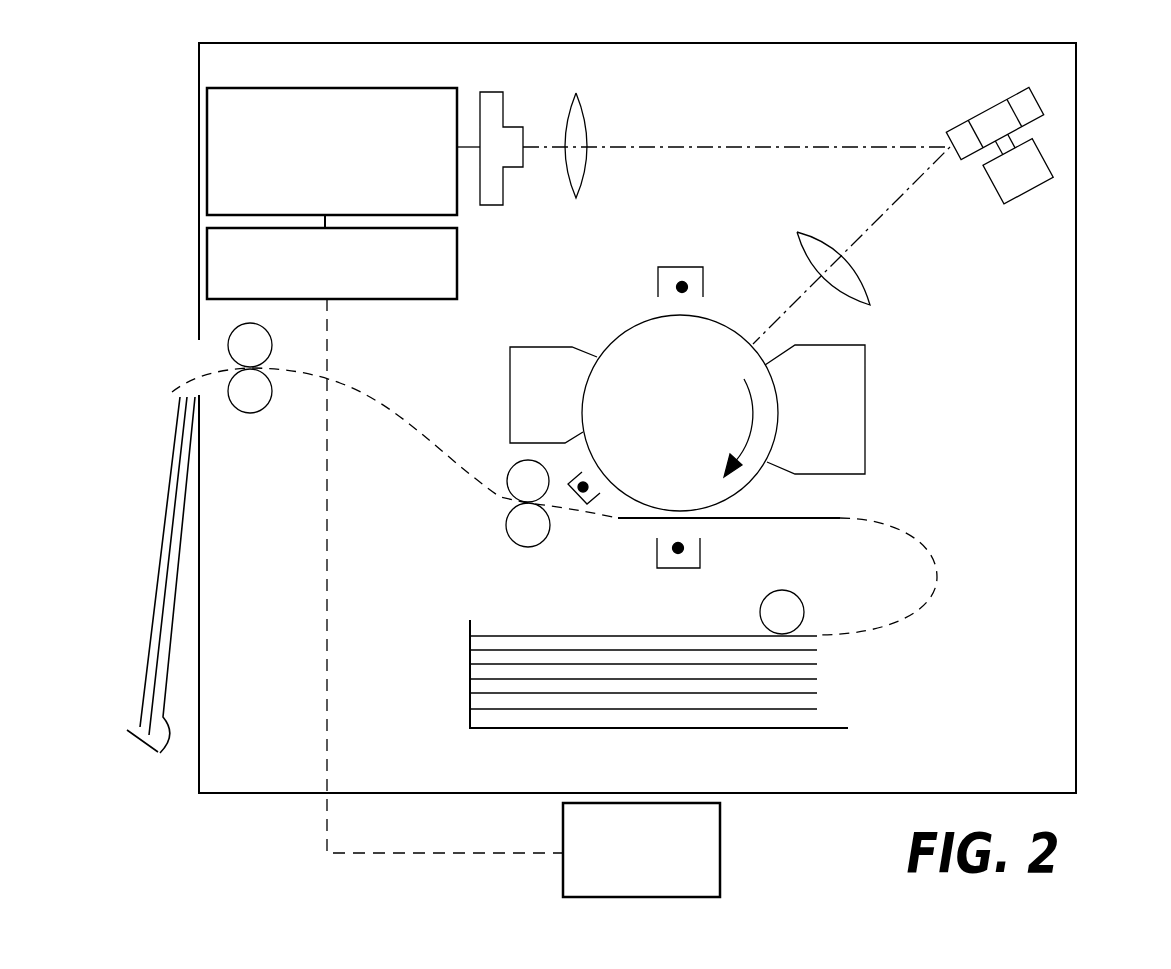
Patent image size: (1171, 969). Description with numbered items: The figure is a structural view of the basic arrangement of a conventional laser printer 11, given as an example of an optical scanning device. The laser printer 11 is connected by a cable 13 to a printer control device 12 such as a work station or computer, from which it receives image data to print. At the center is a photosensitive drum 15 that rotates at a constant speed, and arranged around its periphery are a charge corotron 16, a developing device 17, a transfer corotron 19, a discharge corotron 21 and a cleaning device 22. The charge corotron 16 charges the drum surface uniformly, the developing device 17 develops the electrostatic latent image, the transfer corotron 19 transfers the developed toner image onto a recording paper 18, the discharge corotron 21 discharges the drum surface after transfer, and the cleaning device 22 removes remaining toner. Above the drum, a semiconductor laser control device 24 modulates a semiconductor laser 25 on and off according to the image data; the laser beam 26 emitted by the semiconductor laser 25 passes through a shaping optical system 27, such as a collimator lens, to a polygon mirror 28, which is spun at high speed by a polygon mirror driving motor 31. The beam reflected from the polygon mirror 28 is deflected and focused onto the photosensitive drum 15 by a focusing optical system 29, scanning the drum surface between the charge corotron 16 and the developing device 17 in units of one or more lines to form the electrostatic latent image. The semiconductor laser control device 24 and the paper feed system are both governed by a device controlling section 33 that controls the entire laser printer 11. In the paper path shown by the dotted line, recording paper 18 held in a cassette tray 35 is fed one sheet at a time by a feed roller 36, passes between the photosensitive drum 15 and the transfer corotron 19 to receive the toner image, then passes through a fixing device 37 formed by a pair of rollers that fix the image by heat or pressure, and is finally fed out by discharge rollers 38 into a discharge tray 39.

The laser printer 11 is at (1080, 349).
The printer control device 12 is at (720, 850).
The cable 13 is at (327, 815).
The photosensitive drum 15 is at (625, 332).
The charge corotron 16 is at (677, 265).
The developing device 17 is at (865, 410).
The recording paper 18 is at (828, 518).
The transfer corotron 19 is at (700, 547).
The discharge corotron 21 is at (598, 501).
The cleaning device 22 is at (555, 348).
The semiconductor laser control device 24 is at (248, 88).
The semiconductor laser 25 is at (505, 193).
The laser beam 26 is at (470, 146).
The shaping optical system 27 is at (585, 168).
The polygon mirror 28 is at (997, 103).
The focusing optical system 29 is at (863, 282).
The polygon mirror driving motor 31 is at (998, 192).
The device controlling section 33 is at (349, 299).
The cassette tray 35 is at (470, 690).
The feed roller 36 is at (787, 590).
The fixing device 37 is at (503, 518).
The discharge rollers 38 is at (258, 413).
The discharge tray 39 is at (160, 753).